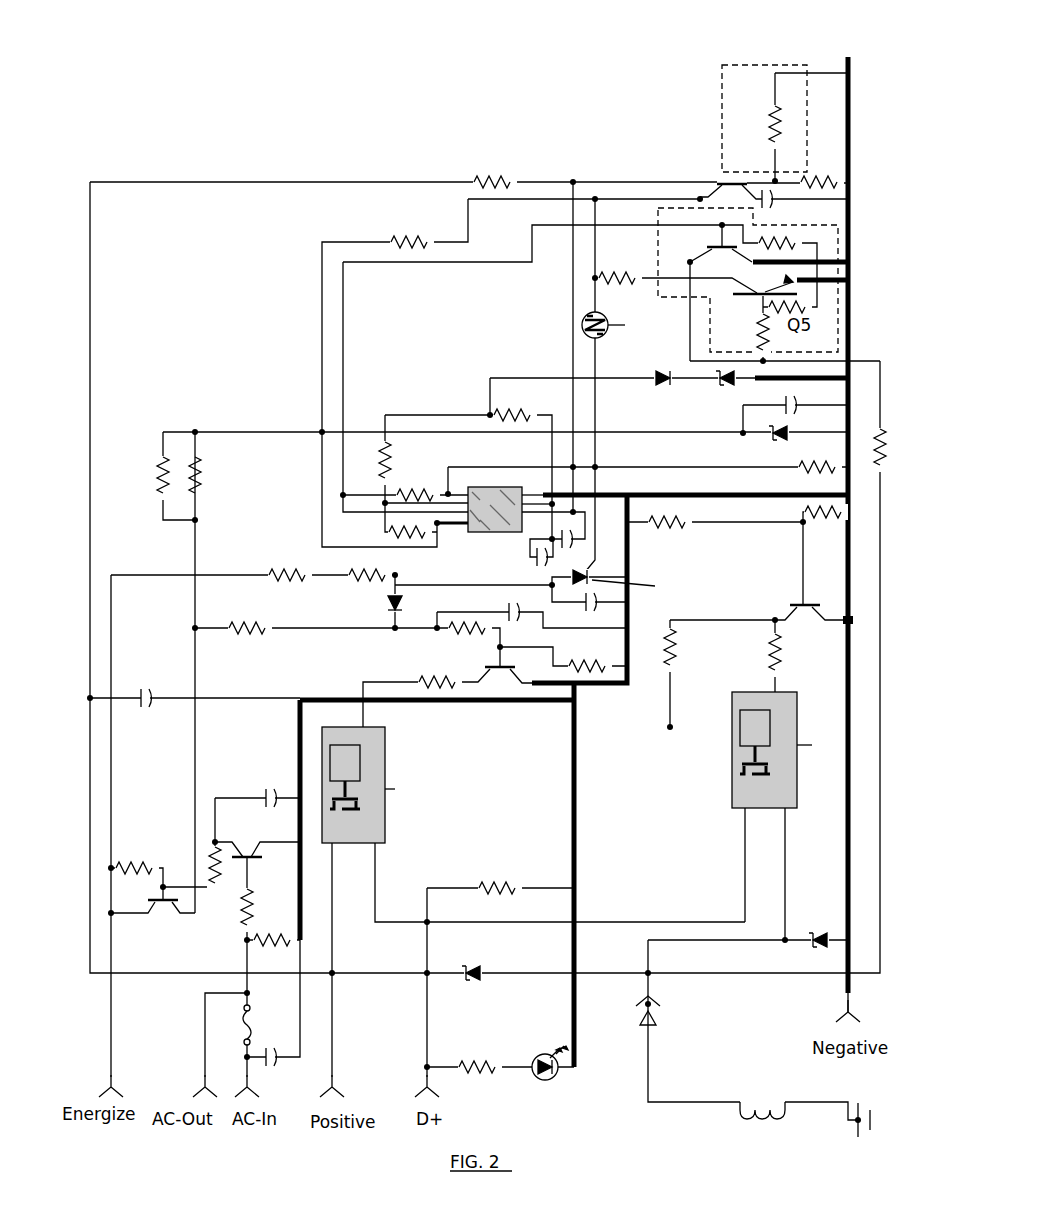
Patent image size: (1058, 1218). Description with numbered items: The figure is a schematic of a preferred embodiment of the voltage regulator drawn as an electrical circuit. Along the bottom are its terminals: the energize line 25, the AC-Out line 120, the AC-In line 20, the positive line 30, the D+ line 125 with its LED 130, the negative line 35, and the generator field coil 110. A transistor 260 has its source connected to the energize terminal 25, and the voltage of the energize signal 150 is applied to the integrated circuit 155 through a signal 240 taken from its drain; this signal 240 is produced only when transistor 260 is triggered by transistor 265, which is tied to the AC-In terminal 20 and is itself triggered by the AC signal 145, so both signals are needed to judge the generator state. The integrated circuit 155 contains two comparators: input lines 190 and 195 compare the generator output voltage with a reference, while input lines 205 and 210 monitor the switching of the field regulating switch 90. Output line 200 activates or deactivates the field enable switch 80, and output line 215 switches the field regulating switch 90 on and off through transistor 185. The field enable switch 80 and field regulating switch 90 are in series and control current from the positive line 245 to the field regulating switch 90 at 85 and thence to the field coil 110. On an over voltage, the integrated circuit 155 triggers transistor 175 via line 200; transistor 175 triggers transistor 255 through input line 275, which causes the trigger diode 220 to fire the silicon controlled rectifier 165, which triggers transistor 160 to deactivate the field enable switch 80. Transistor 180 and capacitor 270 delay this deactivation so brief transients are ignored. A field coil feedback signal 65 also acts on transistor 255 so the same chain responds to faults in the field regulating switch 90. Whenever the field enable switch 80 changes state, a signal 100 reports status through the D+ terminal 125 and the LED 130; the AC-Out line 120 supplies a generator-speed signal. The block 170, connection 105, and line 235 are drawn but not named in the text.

The AC-In line 20 is at (259, 1087).
The energize line 25 is at (110, 1087).
The positive line 30 is at (336, 1087).
The negative line 35 is at (855, 1025).
The field coil feedback signal 65 is at (880, 800).
The field enable switch 80 is at (385, 795).
The field regulating switch current point 85 is at (742, 890).
The field regulating switch 90 is at (732, 765).
The signal 100 is at (427, 1043).
The AC-Out line 105 is at (205, 1023).
The field coil 110 is at (773, 1110).
The AC-Out line 120 is at (205, 1087).
The D+ line 125 is at (442, 1090).
The light emitting diode 130 is at (555, 1076).
The AC signal 145 is at (249, 958).
The energize signal 150 is at (110, 965).
The integrated circuit 155 is at (485, 532).
The transistor 160 is at (502, 669).
The silicon controlled rectifier 165 is at (585, 572).
The current limiter U3 170 is at (658, 215).
The transistor 175 is at (717, 247).
The transistor 180 is at (730, 183).
The transistor 185 is at (805, 605).
The input line 190 is at (450, 493).
The input line 195 is at (432, 500).
The output line 200 is at (410, 512).
The input line 205 is at (520, 493).
The input line 210 is at (545, 495).
The output line 215 is at (567, 512).
The trigger diode 220 is at (585, 318).
The supply line 235 is at (690, 920).
The signal 240 is at (193, 742).
The positive line 245 is at (332, 890).
The transistor 255 is at (762, 294).
The transistor 260 is at (167, 902).
The transistor 265 is at (250, 865).
The capacitor 270 is at (770, 198).
The input line 275 is at (748, 372).